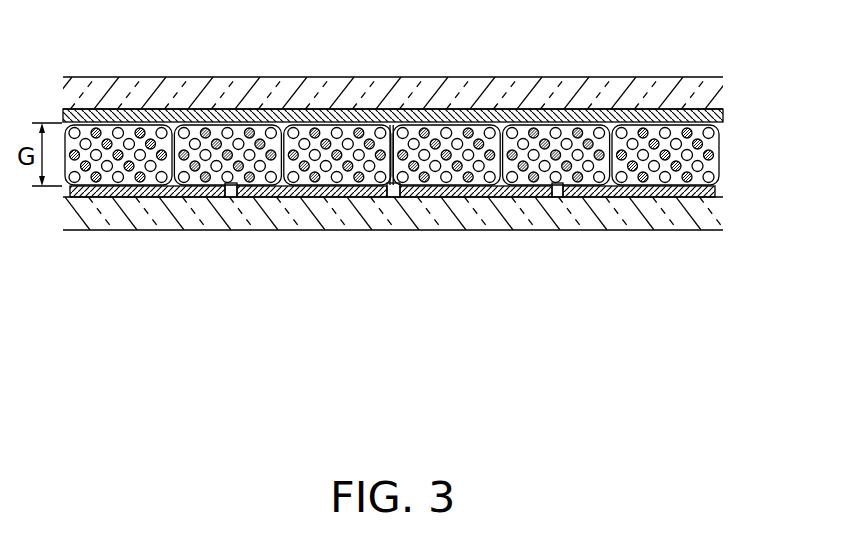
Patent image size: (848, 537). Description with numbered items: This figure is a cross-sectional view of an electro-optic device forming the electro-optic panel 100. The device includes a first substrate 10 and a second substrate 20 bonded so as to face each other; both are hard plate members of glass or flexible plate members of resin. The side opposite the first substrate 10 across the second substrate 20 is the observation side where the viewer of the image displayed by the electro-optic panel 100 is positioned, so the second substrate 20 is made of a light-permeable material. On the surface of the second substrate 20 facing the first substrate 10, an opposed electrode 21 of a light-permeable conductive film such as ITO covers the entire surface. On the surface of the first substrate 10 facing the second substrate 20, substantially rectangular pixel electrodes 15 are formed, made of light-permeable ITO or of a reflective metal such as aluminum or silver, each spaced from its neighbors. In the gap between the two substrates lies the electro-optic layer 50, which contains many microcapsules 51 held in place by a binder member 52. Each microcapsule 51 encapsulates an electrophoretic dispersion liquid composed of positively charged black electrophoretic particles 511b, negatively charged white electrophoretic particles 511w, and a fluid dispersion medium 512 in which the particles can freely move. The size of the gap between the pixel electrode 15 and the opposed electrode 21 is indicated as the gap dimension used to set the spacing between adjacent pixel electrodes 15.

The first substrate 10 is at (712, 212).
The pixel electrode 15 is at (717, 193).
The second substrate 20 is at (717, 95).
The opposed electrode 21 is at (718, 117).
The electro-optic layer 50 is at (456, 101).
The microcapsule 51 is at (507, 125).
The binder member 52 is at (395, 125).
The black electrophoretic particle 511b is at (693, 132).
The white electrophoretic particle 511w is at (715, 170).
The dispersion medium 512 is at (715, 147).
The electro-optic panel 100 is at (455, 153).